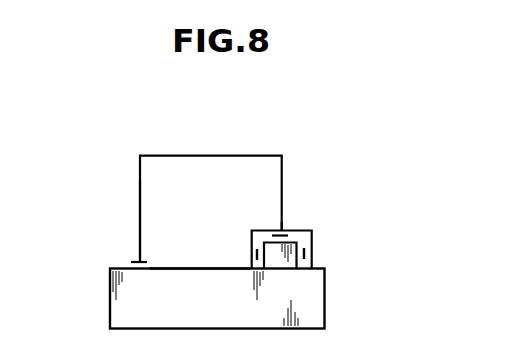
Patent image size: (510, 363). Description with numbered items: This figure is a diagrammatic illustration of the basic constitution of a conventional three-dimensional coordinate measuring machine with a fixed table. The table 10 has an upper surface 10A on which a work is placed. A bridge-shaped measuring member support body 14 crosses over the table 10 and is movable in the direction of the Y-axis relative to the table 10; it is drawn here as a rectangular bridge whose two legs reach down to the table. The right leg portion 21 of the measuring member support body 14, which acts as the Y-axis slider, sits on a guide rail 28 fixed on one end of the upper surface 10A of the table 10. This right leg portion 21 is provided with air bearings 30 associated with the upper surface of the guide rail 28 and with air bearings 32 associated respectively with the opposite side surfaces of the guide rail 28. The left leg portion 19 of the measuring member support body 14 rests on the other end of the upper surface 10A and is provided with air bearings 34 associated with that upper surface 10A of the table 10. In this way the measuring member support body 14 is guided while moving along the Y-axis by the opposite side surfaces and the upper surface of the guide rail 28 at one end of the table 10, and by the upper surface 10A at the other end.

The table 10 is at (325, 310).
The upper surface 10A is at (183, 268).
The measuring member support body 14 is at (237, 155).
The left leg portion 19 is at (139, 235).
The right leg portion 21 is at (273, 234).
The guide rail 28 is at (313, 241).
The air bearings 30 is at (285, 232).
The air bearings 32 is at (252, 253).
The air bearings 34 is at (147, 261).